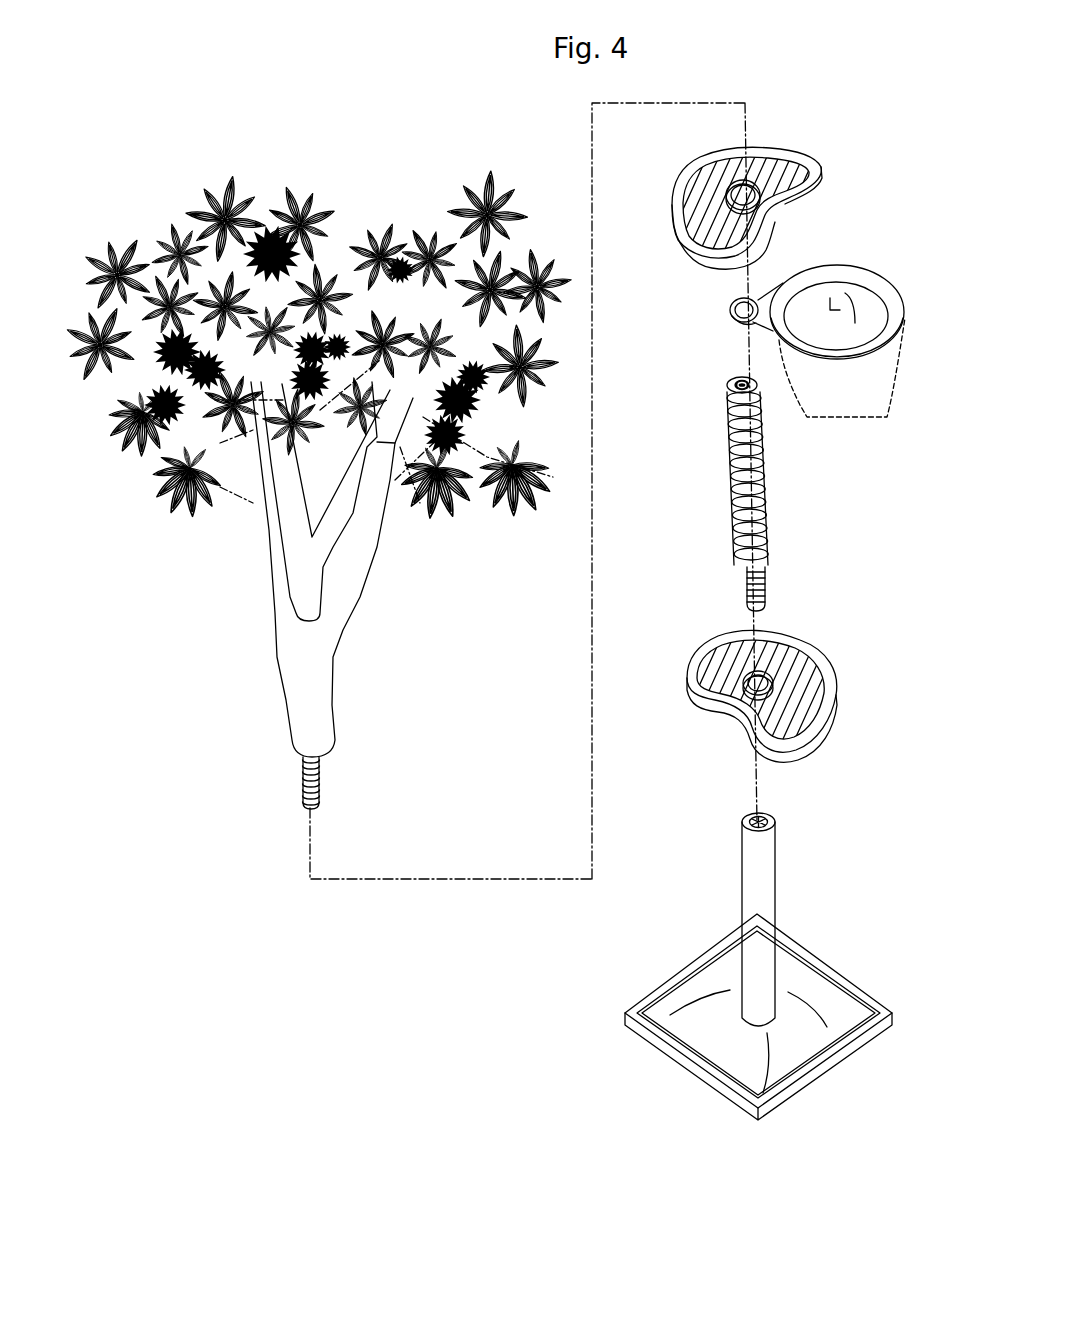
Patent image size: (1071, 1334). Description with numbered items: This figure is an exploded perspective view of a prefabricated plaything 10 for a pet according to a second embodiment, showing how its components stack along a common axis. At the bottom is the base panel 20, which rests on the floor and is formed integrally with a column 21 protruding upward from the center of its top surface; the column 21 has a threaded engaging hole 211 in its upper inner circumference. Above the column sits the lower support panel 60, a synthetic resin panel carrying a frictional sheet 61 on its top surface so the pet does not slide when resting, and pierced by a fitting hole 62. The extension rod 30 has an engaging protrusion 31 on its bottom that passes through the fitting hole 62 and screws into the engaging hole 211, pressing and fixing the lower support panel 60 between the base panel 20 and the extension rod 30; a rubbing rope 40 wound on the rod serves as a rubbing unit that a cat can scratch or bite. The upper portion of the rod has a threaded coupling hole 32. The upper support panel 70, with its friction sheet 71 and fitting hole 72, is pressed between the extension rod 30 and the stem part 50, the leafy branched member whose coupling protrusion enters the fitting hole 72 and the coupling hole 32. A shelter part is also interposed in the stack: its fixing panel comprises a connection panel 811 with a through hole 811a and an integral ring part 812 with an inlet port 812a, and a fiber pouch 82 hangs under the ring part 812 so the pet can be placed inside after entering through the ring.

The plaything 10 is at (192, 48).
The base panel 20 is at (703, 1075).
The column 21 is at (770, 892).
The engaging hole 211 is at (770, 816).
The extension rod 30 is at (738, 393).
The engaging protrusion 31 is at (767, 578).
The coupling hole 32 is at (738, 380).
The rubbing rope 40 is at (765, 505).
The stem part 50 is at (140, 214).
The lower support panel 60 is at (818, 700).
The frictional sheet 61 is at (805, 655).
The fitting hole 62 is at (740, 690).
The upper support panel 70 is at (818, 170).
The friction sheet 71 is at (760, 185).
The fitting hole 72 is at (745, 150).
The connection panel 811 is at (728, 322).
The through hole 811a is at (735, 301).
The ring part 812 is at (890, 275).
The inlet port 812a is at (845, 290).
The pouch 82 is at (860, 412).